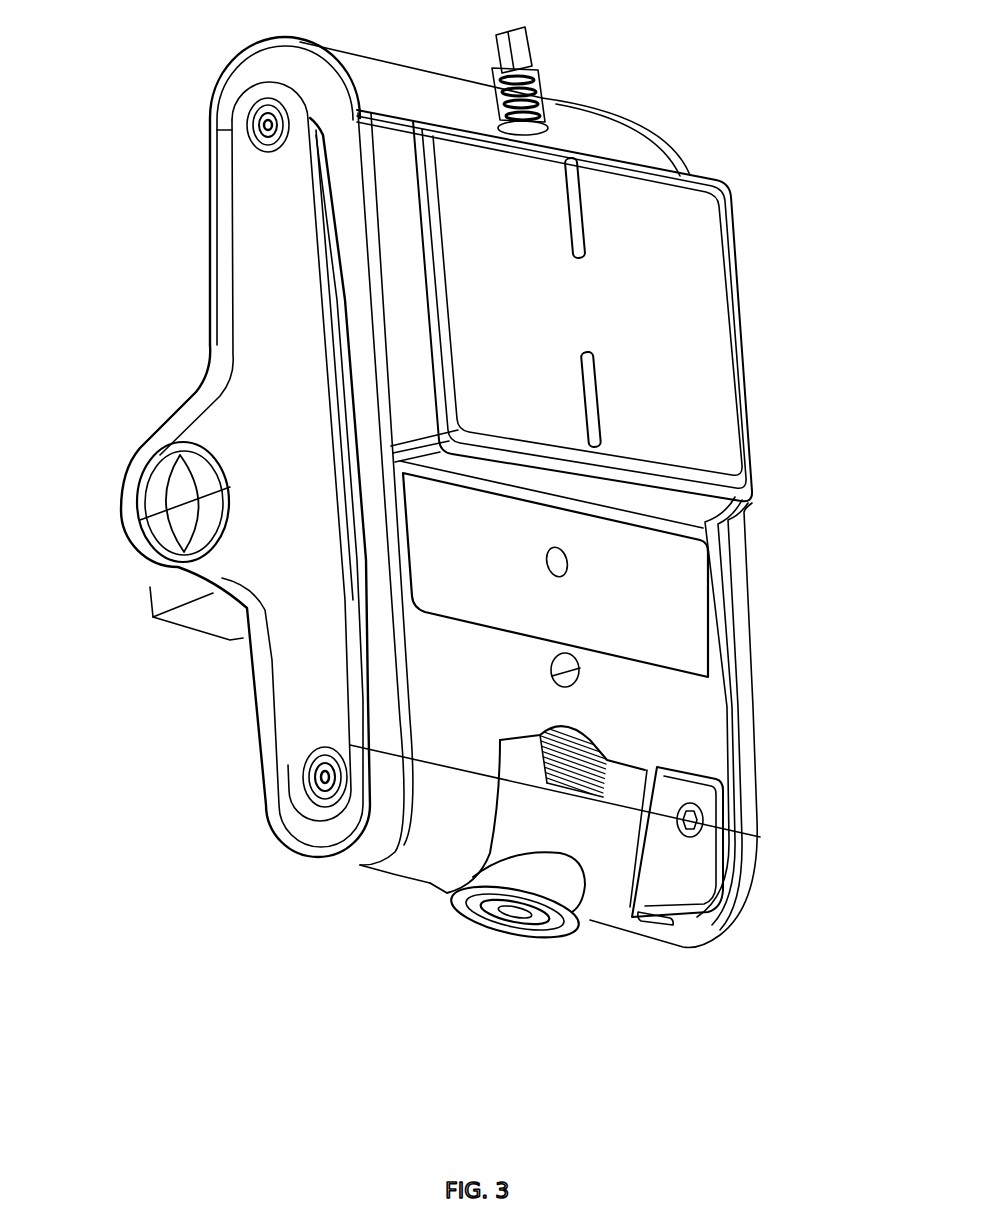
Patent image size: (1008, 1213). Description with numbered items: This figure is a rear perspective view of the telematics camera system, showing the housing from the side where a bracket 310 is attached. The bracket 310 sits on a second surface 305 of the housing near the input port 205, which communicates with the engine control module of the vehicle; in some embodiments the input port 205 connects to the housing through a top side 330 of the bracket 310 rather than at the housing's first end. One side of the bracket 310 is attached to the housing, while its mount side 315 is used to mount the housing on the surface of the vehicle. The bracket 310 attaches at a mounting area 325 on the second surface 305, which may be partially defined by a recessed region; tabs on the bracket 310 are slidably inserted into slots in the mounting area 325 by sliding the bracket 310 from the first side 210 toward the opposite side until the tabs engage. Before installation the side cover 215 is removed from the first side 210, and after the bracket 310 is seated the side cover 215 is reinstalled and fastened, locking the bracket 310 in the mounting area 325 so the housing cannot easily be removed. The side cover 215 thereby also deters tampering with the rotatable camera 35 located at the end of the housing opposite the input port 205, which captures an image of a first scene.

The rotatable camera 35 is at (580, 920).
The input port 205 is at (530, 87).
The first side 210 is at (270, 530).
The side cover 215 is at (233, 333).
The second surface 305 is at (652, 706).
The bracket 310 is at (739, 323).
The mount side 315 is at (674, 238).
The mounting area 325 is at (717, 526).
The top side 330 is at (583, 147).